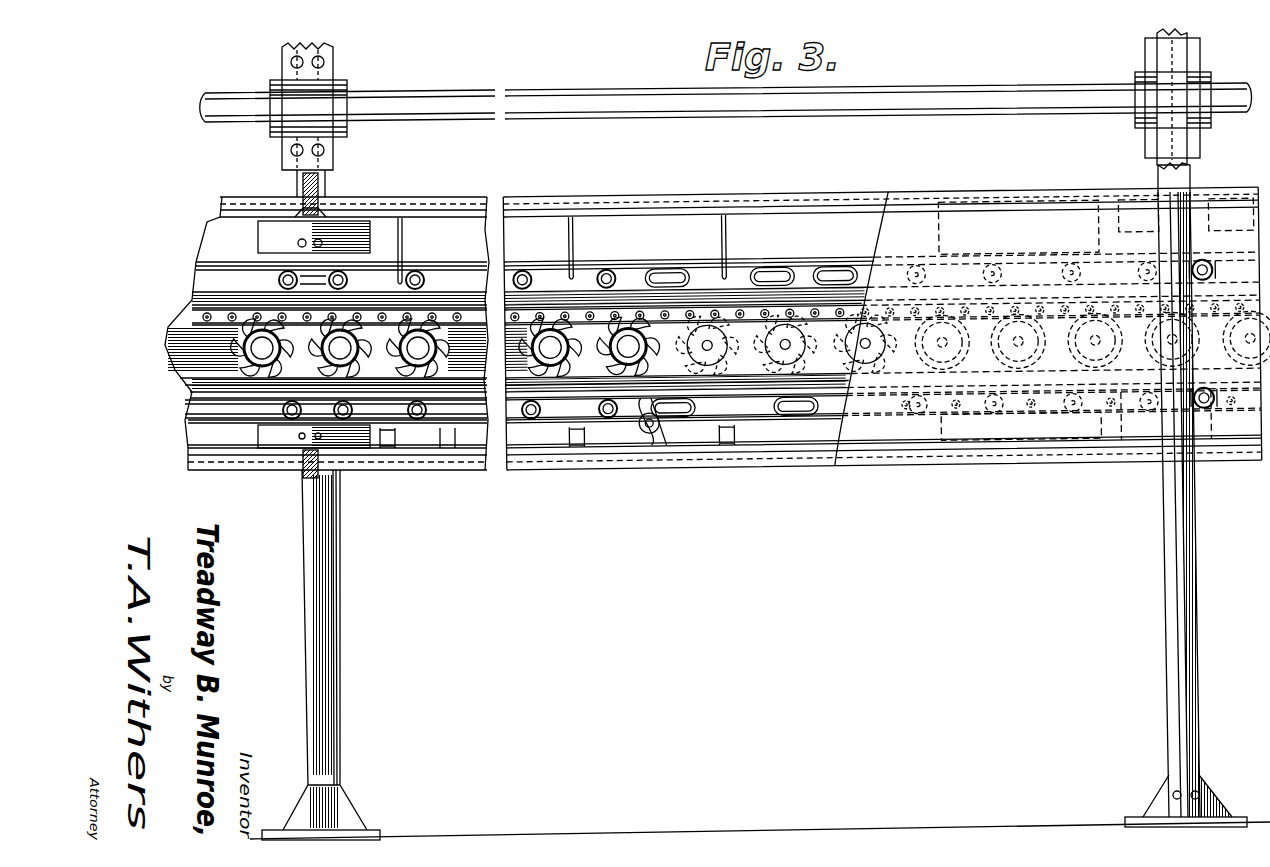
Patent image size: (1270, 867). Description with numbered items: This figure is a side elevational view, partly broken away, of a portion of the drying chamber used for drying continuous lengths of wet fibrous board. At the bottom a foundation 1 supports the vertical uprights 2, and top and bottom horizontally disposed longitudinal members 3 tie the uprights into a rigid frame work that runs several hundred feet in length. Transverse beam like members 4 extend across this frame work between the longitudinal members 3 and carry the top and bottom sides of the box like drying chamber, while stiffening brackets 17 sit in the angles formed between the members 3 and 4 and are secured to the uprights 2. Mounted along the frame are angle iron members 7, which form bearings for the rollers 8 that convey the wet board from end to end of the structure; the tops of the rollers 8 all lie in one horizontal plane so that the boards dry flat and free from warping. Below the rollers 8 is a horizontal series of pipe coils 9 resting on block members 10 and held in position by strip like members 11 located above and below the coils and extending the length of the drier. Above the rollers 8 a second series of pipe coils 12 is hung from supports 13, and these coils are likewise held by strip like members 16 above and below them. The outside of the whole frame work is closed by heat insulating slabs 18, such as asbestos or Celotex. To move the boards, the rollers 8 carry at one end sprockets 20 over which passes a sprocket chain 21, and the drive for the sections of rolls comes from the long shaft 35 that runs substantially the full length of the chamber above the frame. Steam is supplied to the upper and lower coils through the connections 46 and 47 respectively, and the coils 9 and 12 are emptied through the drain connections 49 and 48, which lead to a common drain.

The foundation 1 is at (375, 830).
The uprights 2 is at (325, 193).
The longitudinal members 3 is at (420, 210).
The transverse beam like members 4 is at (300, 205).
The angle iron members 7 is at (182, 337).
The rollers 8 is at (258, 335).
The pipe coils 9 is at (468, 440).
The block members 10 is at (455, 442).
The strip like members 11 is at (195, 414).
The pipe coils 12 is at (665, 274).
The supports 13 is at (397, 268).
The strip like members 16 is at (205, 270).
The stiffening brackets 17 is at (290, 237).
The heat insulating slabs 18 is at (1000, 232).
The sprockets 20 is at (190, 357).
The sprocket chain 21 is at (215, 318).
The shaft 35 is at (232, 95).
The connection 46 is at (1213, 267).
The connection 47 is at (1210, 405).
The drain connection 48 is at (282, 280).
The drain connection 49 is at (290, 410).